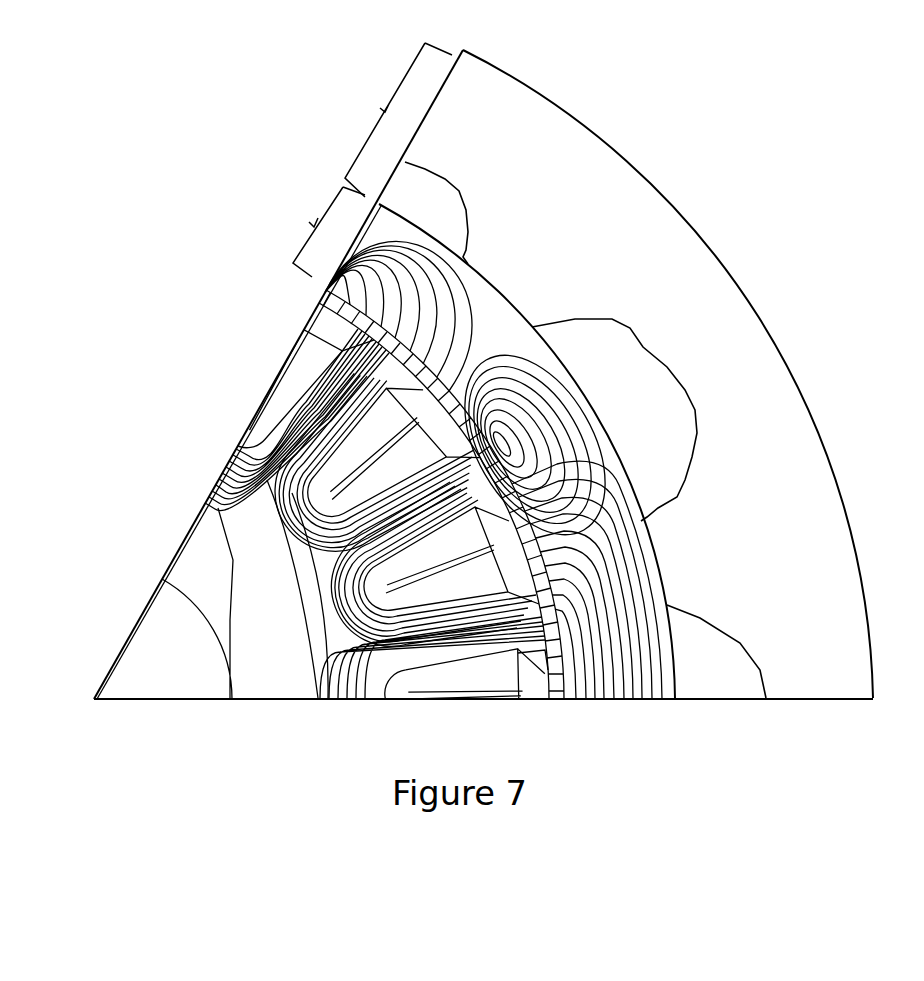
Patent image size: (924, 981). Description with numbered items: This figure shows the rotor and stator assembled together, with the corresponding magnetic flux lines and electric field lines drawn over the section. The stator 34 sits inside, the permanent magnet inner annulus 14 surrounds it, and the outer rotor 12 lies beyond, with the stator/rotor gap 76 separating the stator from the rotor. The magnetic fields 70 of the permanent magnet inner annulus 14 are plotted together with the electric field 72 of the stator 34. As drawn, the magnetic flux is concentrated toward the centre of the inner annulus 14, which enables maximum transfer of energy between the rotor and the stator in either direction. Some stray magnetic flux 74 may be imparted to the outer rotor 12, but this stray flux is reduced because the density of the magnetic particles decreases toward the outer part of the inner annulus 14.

The outer rotor 12 is at (383, 109).
The inner annulus 14 is at (312, 225).
The stator 34 is at (272, 418).
The magnetic fields 70 is at (503, 322).
The electric field 72 is at (343, 402).
The stray magnetic flux 74 is at (628, 327).
The stator/rotor gap 76 is at (360, 325).